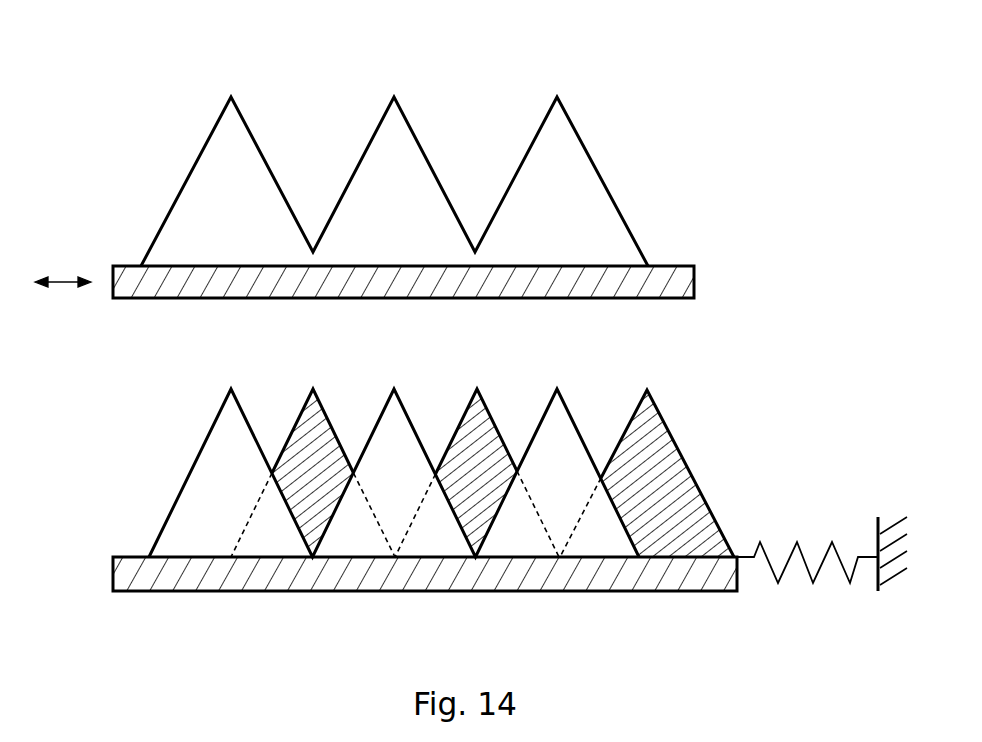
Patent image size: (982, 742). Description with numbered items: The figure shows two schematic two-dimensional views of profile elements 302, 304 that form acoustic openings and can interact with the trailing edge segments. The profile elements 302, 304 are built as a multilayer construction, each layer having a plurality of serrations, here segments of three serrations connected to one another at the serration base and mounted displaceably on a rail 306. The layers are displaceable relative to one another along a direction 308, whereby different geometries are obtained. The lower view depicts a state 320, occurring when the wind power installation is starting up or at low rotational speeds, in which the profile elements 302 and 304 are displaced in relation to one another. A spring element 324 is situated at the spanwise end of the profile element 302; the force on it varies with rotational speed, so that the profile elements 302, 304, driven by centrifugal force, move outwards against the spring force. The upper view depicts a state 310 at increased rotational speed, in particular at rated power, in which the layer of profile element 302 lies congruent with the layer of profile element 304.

The profile element 302 is at (332, 437).
The profile element 304 is at (231, 97).
The rail 306 is at (576, 266).
The direction 308 is at (468, 642).
The state 310 is at (480, 182).
The state 320 is at (461, 349).
The spring element 324 is at (814, 586).